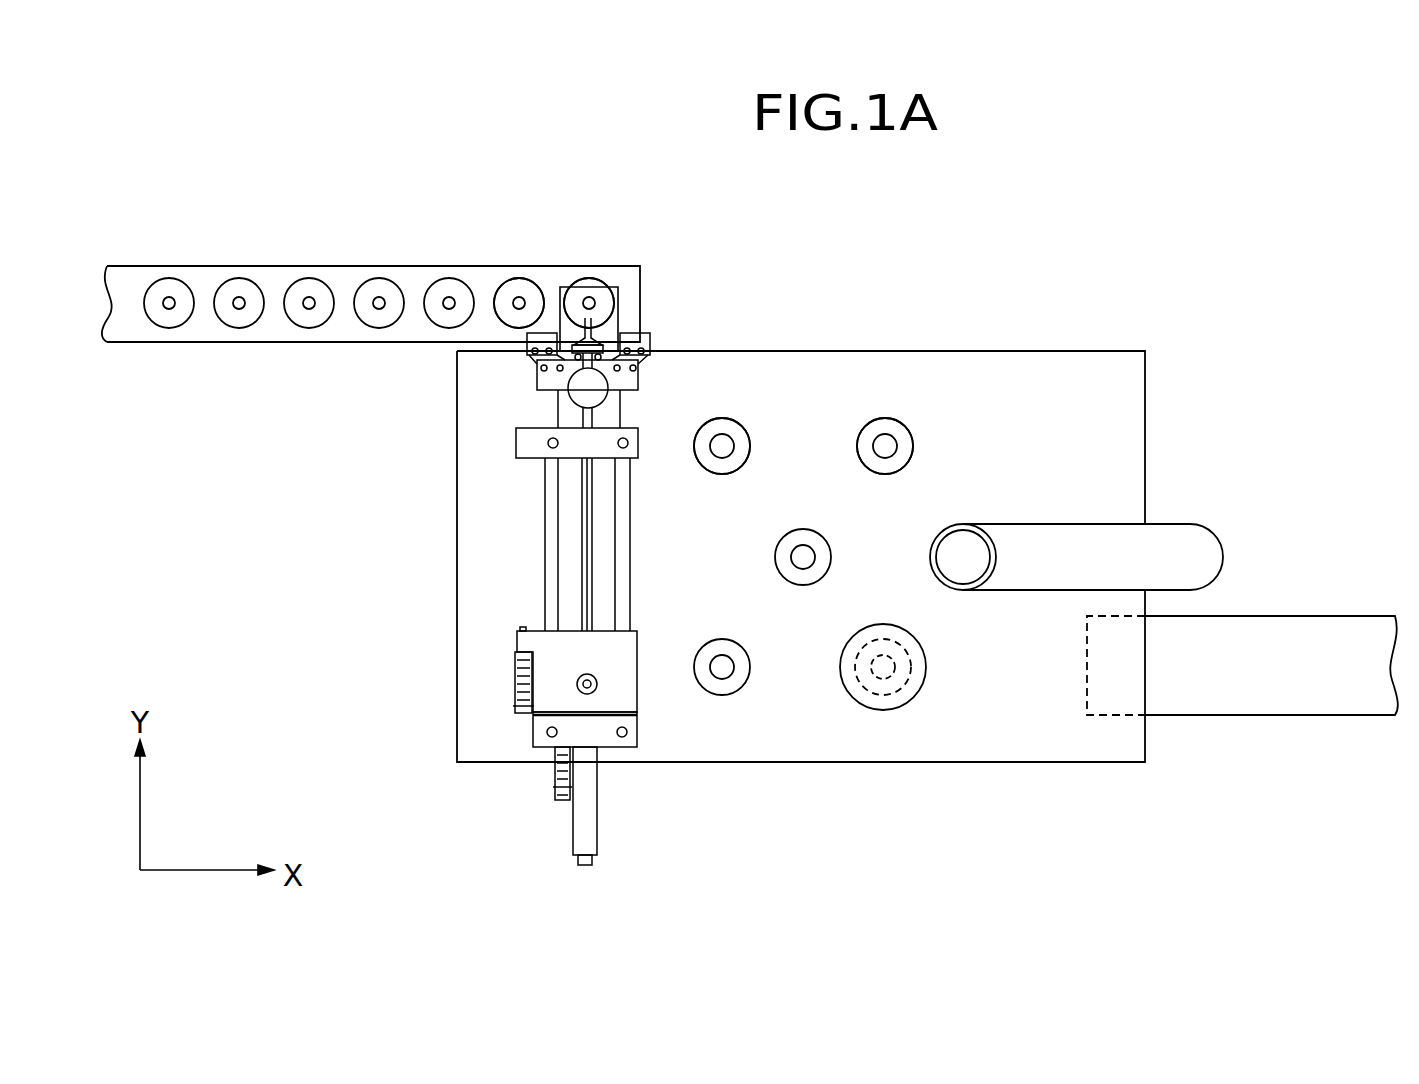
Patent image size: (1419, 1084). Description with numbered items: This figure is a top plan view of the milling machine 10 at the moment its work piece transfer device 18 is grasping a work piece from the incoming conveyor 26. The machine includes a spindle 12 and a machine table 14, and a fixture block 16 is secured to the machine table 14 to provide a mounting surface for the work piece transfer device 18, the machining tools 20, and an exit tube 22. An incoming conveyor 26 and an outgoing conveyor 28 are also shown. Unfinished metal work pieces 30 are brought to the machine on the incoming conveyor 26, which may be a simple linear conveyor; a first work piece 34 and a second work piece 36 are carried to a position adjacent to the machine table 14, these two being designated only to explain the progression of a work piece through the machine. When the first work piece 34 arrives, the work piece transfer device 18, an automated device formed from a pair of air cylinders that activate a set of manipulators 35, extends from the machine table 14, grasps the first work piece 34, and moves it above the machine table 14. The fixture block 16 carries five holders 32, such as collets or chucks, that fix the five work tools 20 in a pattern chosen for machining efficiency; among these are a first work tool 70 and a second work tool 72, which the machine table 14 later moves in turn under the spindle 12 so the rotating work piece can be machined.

The milling machine 10 is at (1180, 212).
The spindle 12 is at (925, 677).
The machine table 14 is at (1190, 410).
The fixture block 16 is at (1057, 378).
The work piece transfer device 18 is at (557, 648).
The machining tools 20 is at (725, 440).
The exit tube 22 is at (1168, 547).
The incoming conveyor 26 is at (345, 278).
The outgoing conveyor 28 is at (1283, 683).
The work pieces 30 is at (166, 316).
The holders 32 is at (710, 440).
The first work piece 34 is at (588, 300).
The manipulators 35 is at (613, 318).
The second work piece 36 is at (519, 300).
The first work tool 70 is at (722, 440).
The second work tool 72 is at (885, 440).